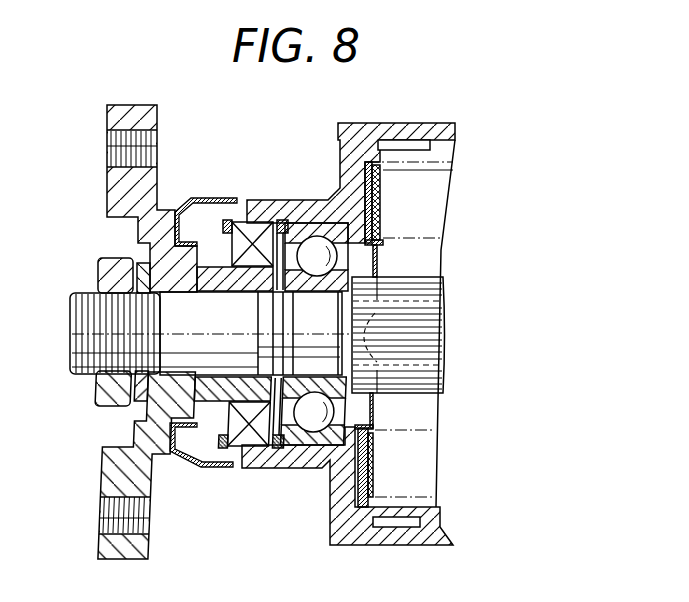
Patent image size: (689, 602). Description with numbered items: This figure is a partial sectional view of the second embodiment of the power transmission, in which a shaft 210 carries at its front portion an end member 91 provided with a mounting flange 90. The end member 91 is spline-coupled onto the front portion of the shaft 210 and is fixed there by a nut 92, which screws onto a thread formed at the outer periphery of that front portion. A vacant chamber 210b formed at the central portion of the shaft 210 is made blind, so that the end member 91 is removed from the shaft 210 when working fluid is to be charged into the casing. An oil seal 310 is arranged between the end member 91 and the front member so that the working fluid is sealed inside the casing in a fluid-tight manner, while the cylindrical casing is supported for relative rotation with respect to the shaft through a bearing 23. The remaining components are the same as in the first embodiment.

The mounting flange 90 is at (143, 108).
The end member 91 is at (213, 265).
The nut 92 is at (105, 260).
The oil seal 310 is at (244, 220).
The shaft 210 is at (245, 297).
The bearing 23 is at (313, 226).
The vacant chamber 210b is at (440, 336).